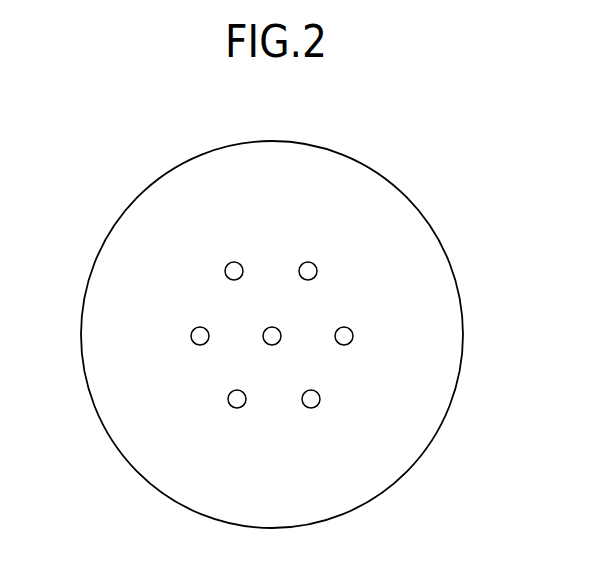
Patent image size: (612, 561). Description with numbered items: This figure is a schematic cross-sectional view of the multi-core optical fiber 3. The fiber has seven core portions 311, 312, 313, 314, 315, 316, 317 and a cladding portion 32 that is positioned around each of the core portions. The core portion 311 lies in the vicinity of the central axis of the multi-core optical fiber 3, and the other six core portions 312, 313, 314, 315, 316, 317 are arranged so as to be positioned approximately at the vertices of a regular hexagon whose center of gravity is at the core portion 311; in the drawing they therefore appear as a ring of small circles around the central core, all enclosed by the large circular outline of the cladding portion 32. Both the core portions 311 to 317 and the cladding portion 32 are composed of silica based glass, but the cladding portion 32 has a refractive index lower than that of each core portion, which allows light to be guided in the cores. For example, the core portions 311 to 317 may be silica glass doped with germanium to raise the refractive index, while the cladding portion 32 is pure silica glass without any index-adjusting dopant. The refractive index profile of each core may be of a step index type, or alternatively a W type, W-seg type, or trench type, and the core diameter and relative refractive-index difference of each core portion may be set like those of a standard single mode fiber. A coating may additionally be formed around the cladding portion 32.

The multi-core optical fiber 3 is at (378, 140).
The cladding portion 32 is at (440, 382).
The core portion 311 is at (271, 327).
The core portion 312 is at (317, 266).
The core portion 313 is at (354, 337).
The core portion 314 is at (320, 402).
The core portion 315 is at (228, 401).
The core portion 316 is at (191, 337).
The core portion 317 is at (225, 271).